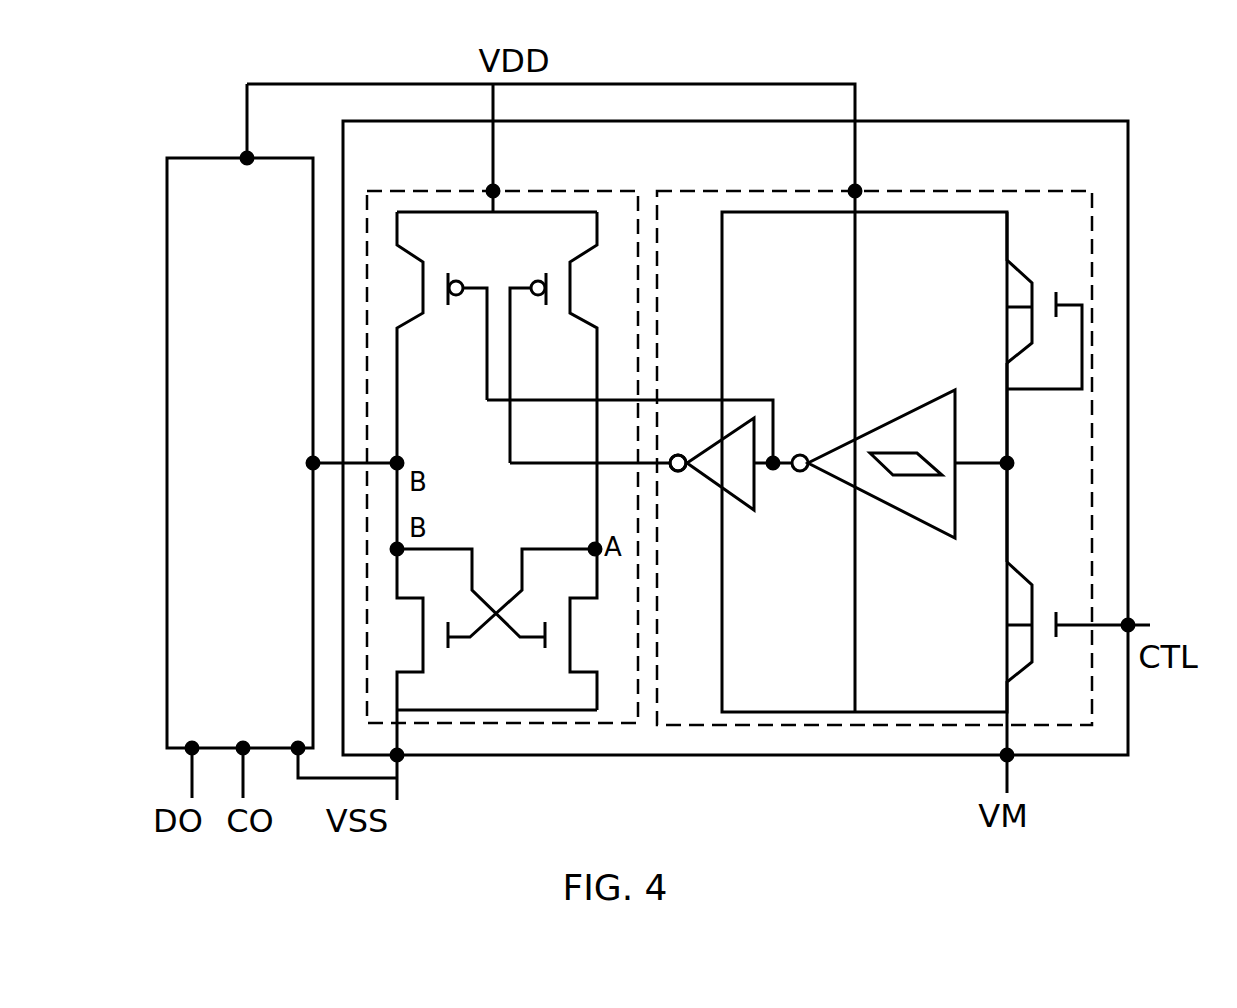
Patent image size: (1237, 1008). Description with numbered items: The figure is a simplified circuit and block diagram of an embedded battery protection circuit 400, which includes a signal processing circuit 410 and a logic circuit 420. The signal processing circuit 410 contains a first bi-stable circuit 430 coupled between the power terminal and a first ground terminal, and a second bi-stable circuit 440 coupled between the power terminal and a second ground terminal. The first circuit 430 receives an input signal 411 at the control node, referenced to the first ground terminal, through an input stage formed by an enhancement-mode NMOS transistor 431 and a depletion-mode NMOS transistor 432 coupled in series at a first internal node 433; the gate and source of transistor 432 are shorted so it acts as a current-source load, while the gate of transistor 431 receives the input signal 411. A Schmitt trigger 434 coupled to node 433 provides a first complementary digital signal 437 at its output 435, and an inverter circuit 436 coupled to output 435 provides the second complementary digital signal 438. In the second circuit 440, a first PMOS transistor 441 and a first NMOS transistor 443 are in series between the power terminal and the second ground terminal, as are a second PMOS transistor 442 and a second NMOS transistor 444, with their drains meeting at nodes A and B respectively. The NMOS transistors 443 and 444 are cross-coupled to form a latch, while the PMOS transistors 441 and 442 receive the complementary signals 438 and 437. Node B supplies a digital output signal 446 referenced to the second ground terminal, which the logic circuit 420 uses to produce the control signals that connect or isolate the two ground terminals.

The battery protection circuit 400 is at (1091, 93).
The signal processing circuit 410 is at (1060, 164).
The input signal 411 is at (1155, 604).
The logic circuit 420 is at (220, 204).
The first bi-stable circuit 430 is at (908, 190).
The enhancement-mode NMOS transistor 431 is at (1041, 658).
The depletion-mode NMOS transistor 432 is at (1016, 300).
The first internal node 433 is at (1038, 462).
The Schmitt trigger 434 is at (907, 459).
The output of the Schmitt trigger 435 is at (776, 470).
The inverter circuit 436 is at (708, 476).
The first complementary digital signal 437 is at (683, 396).
The second complementary digital signal 438 is at (666, 473).
The second bi-stable circuit 440 is at (548, 191).
The first PMOS transistor 441 is at (566, 380).
The second PMOS transistor 442 is at (429, 337).
The first NMOS transistor 443 is at (520, 629).
The second NMOS transistor 444 is at (483, 674).
The digital output signal 446 is at (401, 455).